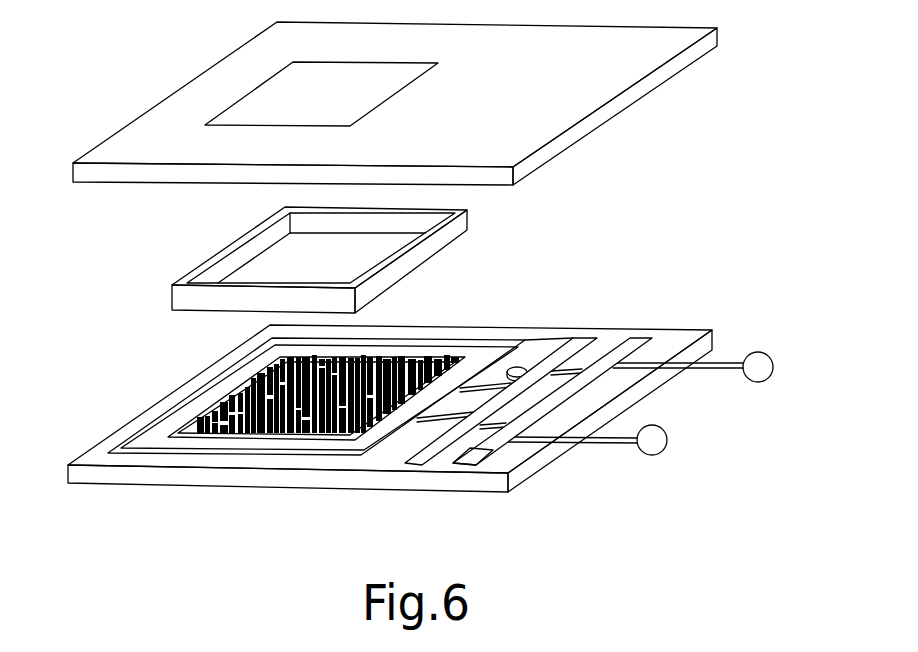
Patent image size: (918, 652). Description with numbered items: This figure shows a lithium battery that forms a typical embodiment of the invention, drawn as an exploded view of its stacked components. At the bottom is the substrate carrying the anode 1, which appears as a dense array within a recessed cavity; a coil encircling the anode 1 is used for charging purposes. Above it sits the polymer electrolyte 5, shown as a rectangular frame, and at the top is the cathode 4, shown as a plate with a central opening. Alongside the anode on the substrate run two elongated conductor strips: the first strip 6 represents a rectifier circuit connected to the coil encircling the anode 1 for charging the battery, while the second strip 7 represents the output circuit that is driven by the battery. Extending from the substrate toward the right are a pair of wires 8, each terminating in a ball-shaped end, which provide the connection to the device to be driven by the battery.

The anode 1 is at (200, 396).
The cathode 4 is at (650, 55).
The polymer electrolyte 5 is at (217, 270).
The first strip 6 is at (590, 338).
The second strip 7 is at (497, 450).
The pair of wires 8 is at (764, 372).